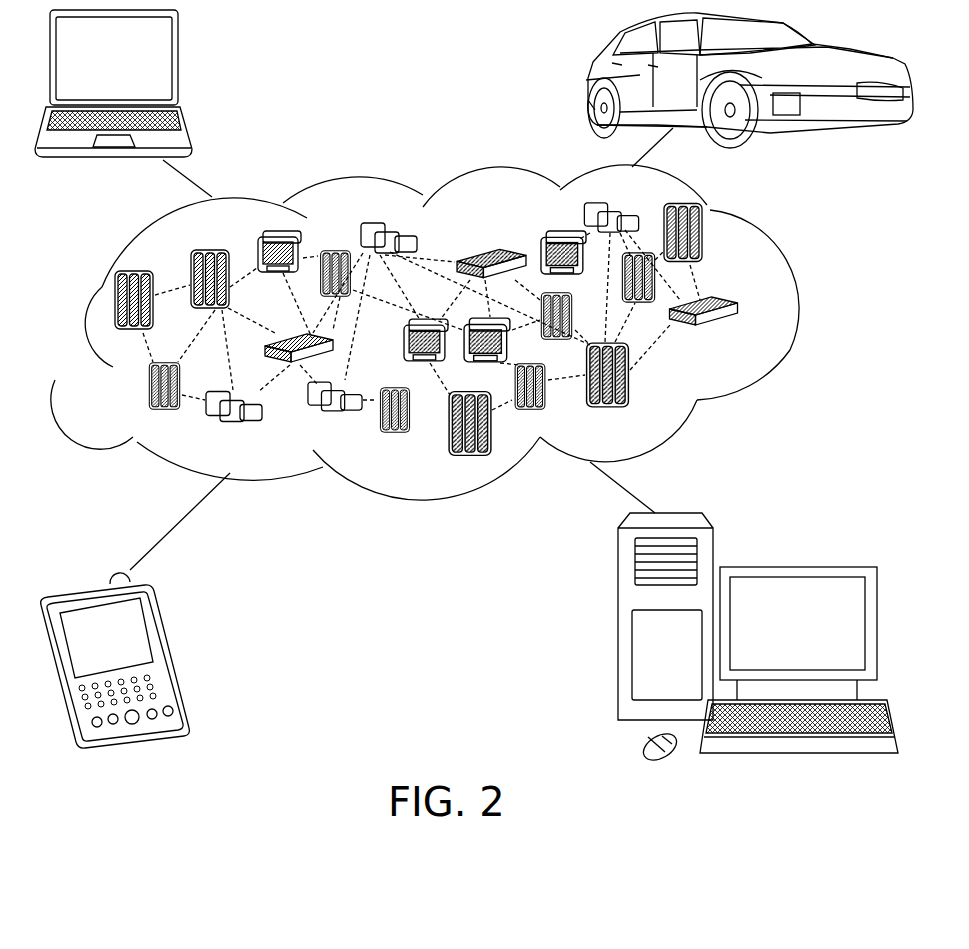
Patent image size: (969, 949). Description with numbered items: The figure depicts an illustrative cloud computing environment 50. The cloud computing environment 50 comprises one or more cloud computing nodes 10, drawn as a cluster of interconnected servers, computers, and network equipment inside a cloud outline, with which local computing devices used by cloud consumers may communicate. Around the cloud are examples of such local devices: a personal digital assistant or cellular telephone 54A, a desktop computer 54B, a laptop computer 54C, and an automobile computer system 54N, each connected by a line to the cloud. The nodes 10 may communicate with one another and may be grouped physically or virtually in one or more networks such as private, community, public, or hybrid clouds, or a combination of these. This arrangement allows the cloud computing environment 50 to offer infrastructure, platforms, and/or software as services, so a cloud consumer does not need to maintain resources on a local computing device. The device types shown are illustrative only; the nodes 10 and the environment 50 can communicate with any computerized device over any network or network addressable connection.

The cloud computing node 10 is at (744, 337).
The cloud computing environment 50 is at (797, 310).
The personal digital assistant or cellular telephone 54A is at (173, 650).
The desktop computer 54B is at (795, 567).
The laptop computer 54C is at (178, 65).
The automobile computer system 54N is at (590, 80).